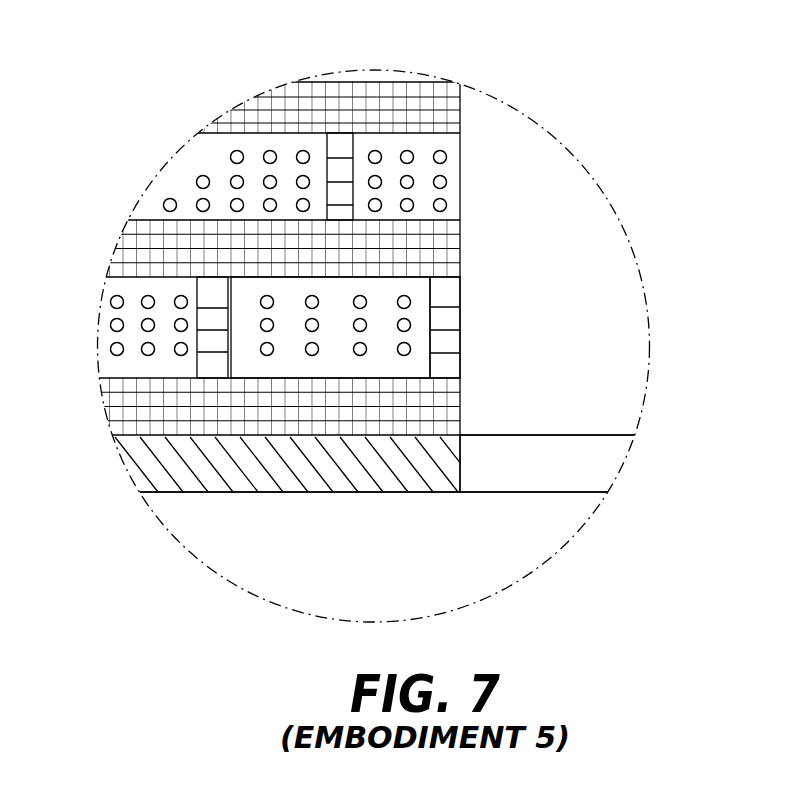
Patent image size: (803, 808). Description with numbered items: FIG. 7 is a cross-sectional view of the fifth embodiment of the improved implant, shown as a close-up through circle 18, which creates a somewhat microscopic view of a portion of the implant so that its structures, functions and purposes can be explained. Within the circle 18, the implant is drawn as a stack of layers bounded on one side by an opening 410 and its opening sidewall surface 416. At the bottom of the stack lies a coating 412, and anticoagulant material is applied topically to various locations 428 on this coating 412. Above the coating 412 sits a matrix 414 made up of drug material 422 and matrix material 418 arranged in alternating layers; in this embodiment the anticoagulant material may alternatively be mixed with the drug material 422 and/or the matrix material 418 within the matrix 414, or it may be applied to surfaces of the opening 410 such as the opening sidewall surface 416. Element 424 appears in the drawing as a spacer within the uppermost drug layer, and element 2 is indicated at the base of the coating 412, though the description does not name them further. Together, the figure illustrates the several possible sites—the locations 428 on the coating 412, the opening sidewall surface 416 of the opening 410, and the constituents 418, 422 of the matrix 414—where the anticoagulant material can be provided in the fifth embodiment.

The substrate 2 is at (367, 495).
The circle 18 is at (563, 130).
The opening 410 is at (603, 448).
The coating 412 is at (190, 475).
The matrix 414 is at (412, 310).
The opening sidewall surface 416 is at (463, 137).
The matrix material 418 is at (163, 253).
The drug material 422 is at (143, 318).
The spacer bar 424 is at (338, 150).
The locations 428 is at (245, 497).